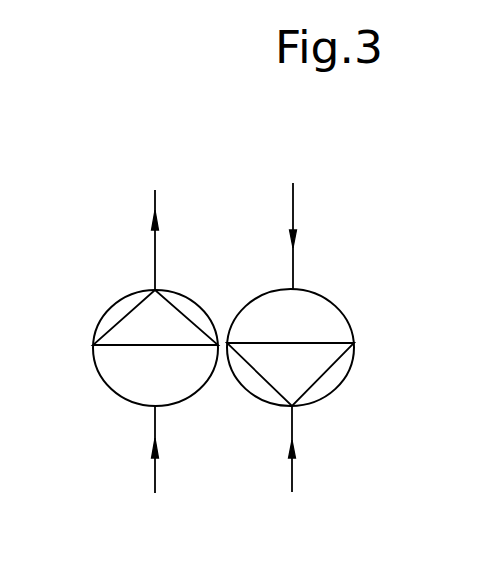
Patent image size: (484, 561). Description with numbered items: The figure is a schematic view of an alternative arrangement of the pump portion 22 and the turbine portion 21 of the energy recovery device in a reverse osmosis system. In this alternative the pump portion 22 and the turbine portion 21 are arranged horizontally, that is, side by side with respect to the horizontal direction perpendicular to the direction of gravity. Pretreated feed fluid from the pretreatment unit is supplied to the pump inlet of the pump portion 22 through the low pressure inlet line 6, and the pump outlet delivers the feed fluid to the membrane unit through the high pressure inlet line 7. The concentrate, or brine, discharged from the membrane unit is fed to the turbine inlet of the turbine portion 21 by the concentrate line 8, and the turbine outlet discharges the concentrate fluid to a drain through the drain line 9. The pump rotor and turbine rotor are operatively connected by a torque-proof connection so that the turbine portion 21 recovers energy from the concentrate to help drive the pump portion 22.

The pump portion 22 is at (103, 379).
The turbine portion 21 is at (350, 372).
The high pressure inlet line 7 is at (153, 246).
The low pressure inlet line 6 is at (153, 477).
The concentrate line 8 is at (297, 219).
The drain line 9 is at (296, 465).